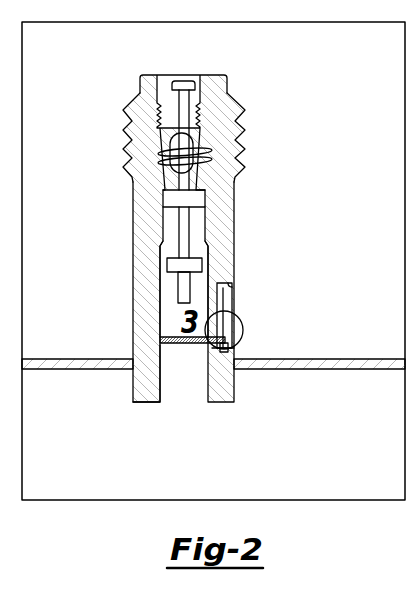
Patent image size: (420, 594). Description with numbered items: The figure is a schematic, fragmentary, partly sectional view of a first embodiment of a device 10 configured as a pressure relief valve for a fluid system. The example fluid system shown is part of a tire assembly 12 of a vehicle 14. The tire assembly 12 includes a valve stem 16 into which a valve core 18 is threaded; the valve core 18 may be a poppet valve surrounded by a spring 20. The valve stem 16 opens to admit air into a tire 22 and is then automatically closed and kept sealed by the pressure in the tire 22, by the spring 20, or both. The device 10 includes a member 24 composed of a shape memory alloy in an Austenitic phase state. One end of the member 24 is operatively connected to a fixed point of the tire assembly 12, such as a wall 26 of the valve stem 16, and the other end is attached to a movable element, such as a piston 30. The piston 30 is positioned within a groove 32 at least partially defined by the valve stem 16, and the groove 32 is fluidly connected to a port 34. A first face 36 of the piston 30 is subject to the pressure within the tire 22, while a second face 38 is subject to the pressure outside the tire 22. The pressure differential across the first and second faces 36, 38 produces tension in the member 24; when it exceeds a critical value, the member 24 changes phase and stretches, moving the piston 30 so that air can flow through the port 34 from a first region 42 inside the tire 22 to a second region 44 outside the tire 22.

The device 10 is at (294, 310).
The tire assembly 12 is at (104, 90).
The vehicle 14 is at (22, 226).
The valve stem 16 is at (243, 133).
The valve core 18 is at (197, 127).
The spring 20 is at (190, 167).
The tire 22 is at (70, 359).
The member 24 is at (163, 348).
The wall 26 is at (170, 320).
The piston 30 is at (216, 350).
The groove 32 is at (242, 328).
The port 34 is at (231, 288).
The first face 36 is at (205, 341).
The second face 38 is at (236, 337).
The first region 42 is at (194, 461).
The second region 44 is at (363, 271).